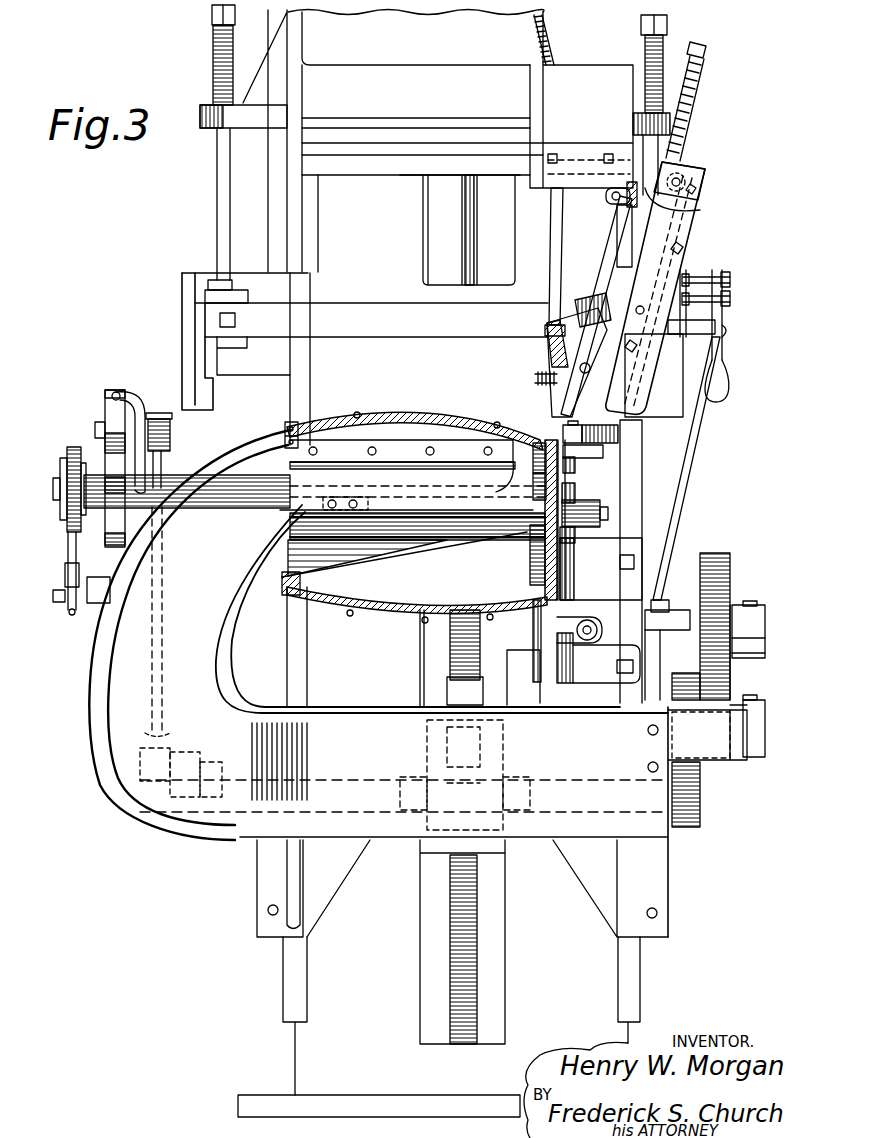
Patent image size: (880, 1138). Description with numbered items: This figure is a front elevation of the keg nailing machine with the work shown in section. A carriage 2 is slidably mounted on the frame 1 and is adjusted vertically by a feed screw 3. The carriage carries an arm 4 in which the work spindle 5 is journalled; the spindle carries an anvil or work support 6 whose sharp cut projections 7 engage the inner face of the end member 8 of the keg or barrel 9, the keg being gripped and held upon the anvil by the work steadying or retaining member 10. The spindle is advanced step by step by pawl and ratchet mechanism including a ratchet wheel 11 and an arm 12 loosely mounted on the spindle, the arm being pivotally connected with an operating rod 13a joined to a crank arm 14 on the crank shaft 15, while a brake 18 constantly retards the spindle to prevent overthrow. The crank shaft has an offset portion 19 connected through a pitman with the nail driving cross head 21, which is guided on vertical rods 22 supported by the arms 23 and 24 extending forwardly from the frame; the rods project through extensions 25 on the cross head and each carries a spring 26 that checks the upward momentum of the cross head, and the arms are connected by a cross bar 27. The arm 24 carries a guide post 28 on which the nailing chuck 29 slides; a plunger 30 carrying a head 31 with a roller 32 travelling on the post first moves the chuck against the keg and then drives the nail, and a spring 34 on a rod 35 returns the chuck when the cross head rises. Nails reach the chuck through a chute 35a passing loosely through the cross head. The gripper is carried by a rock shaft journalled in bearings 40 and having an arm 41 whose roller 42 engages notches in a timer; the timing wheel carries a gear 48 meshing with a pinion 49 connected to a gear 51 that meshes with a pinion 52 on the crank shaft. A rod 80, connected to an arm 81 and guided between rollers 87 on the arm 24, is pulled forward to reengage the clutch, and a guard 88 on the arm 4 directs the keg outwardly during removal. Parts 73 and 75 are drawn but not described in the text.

The frame 1 is at (322, 950).
The carriage 2 is at (240, 842).
The feed screw 3 is at (478, 655).
The arm 4 is at (98, 637).
The work spindle 5 is at (238, 485).
The anvil or work support 6 is at (520, 544).
The sharp cut projections 7 is at (530, 572).
The end member 8 is at (530, 470).
The keg or barrel 9 is at (440, 418).
The work steadying or retaining member 10 is at (577, 497).
The ratchet wheel 11 is at (104, 440).
The arm 12 is at (130, 397).
The operating rod 13a is at (170, 462).
The crank arm 14 is at (185, 750).
The crank shaft 15 is at (340, 778).
The brake 18 is at (60, 512).
The offset portion 19 is at (505, 760).
The nail driving cross head 21 is at (438, 148).
The vertical rods 22 is at (222, 160).
The arm 23 is at (181, 310).
The arm 24 is at (665, 403).
The extensions 25 is at (207, 108).
The spring 26 is at (212, 40).
The cross bar 27 is at (392, 338).
The guide post 28 is at (696, 252).
The nailing chuck 29 is at (555, 342).
The plunger 30 is at (612, 215).
The head 31 is at (690, 208).
The roller 32 is at (708, 182).
The spring 34 is at (703, 62).
The rod 35 is at (696, 98).
The chute 35a is at (549, 48).
The bearings 40 is at (601, 561).
The arm 41 is at (563, 626).
The roller 42 is at (595, 645).
The gear 48 is at (733, 580).
The pinion 49 is at (727, 762).
The gear 51 is at (685, 690).
The pinion 52 is at (690, 828).
The bar 73 is at (606, 452).
The cylinder 75 is at (618, 436).
The rod 80 is at (724, 347).
The arm 81 is at (678, 527).
The rollers 87 is at (728, 292).
The guard 88 is at (410, 512).